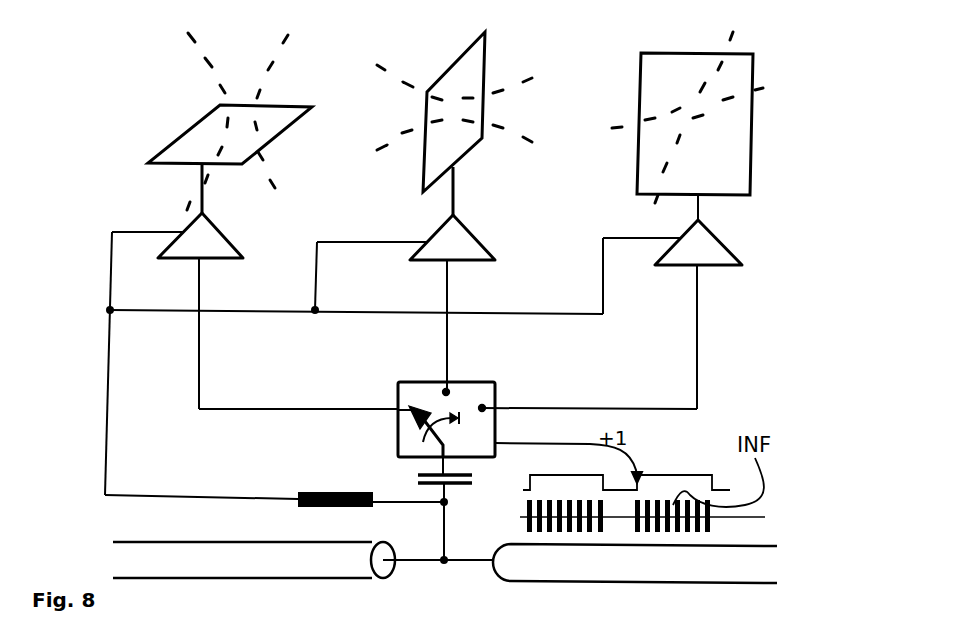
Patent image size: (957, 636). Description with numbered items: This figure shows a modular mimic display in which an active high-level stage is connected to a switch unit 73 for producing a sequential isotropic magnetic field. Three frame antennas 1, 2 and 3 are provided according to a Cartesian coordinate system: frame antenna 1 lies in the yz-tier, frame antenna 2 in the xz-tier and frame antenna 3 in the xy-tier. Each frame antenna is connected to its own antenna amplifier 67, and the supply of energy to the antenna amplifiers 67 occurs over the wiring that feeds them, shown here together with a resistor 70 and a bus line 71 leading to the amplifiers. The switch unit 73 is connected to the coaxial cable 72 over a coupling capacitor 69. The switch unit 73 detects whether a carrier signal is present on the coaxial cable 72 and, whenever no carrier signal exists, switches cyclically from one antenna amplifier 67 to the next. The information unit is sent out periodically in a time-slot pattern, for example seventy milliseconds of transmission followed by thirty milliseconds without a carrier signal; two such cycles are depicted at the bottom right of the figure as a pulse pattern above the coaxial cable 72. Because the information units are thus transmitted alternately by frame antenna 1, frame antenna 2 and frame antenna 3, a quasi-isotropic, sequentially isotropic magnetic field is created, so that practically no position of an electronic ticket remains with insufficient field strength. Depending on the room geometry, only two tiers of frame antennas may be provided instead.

The frame antenna 1 is at (488, 77).
The frame antenna 2 is at (282, 108).
The frame antenna 3 is at (753, 68).
The antenna amplifier 67 is at (450, 239).
The coupling capacitor 69 is at (415, 476).
The resistor 70 is at (297, 490).
The bus line 71 is at (142, 317).
The coaxial cable 72 is at (168, 537).
The switch unit 73 is at (478, 380).